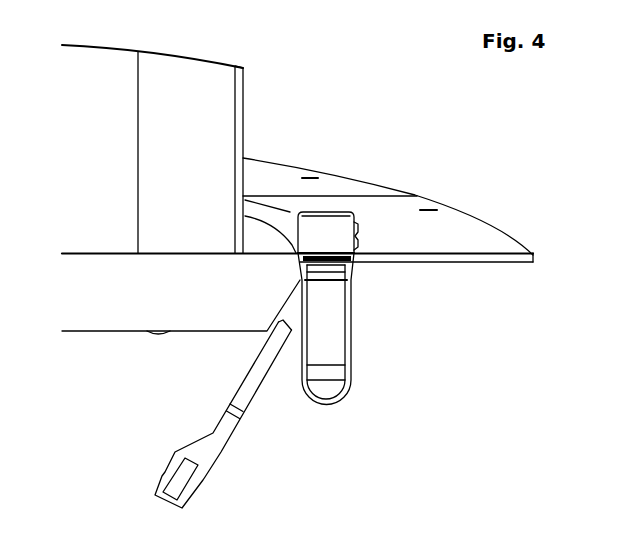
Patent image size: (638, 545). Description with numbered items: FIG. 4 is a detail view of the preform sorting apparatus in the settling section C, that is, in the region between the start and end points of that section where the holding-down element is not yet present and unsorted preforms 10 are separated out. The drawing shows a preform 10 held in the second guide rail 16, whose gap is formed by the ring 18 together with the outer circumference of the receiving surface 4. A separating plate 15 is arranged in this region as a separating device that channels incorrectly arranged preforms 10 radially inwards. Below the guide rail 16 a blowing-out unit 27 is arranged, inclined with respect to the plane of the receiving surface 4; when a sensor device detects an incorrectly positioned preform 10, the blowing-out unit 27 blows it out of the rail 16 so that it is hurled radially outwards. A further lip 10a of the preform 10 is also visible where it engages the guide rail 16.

The receiving surface 4 is at (193, 290).
The preform 10 is at (317, 377).
The clip lip 10a is at (357, 253).
The separating plate 15 is at (218, 122).
The second guide rail 16 is at (343, 141).
The settling section C is at (379, 173).
The ring 18 is at (412, 197).
The blowing-out unit 27 is at (208, 457).